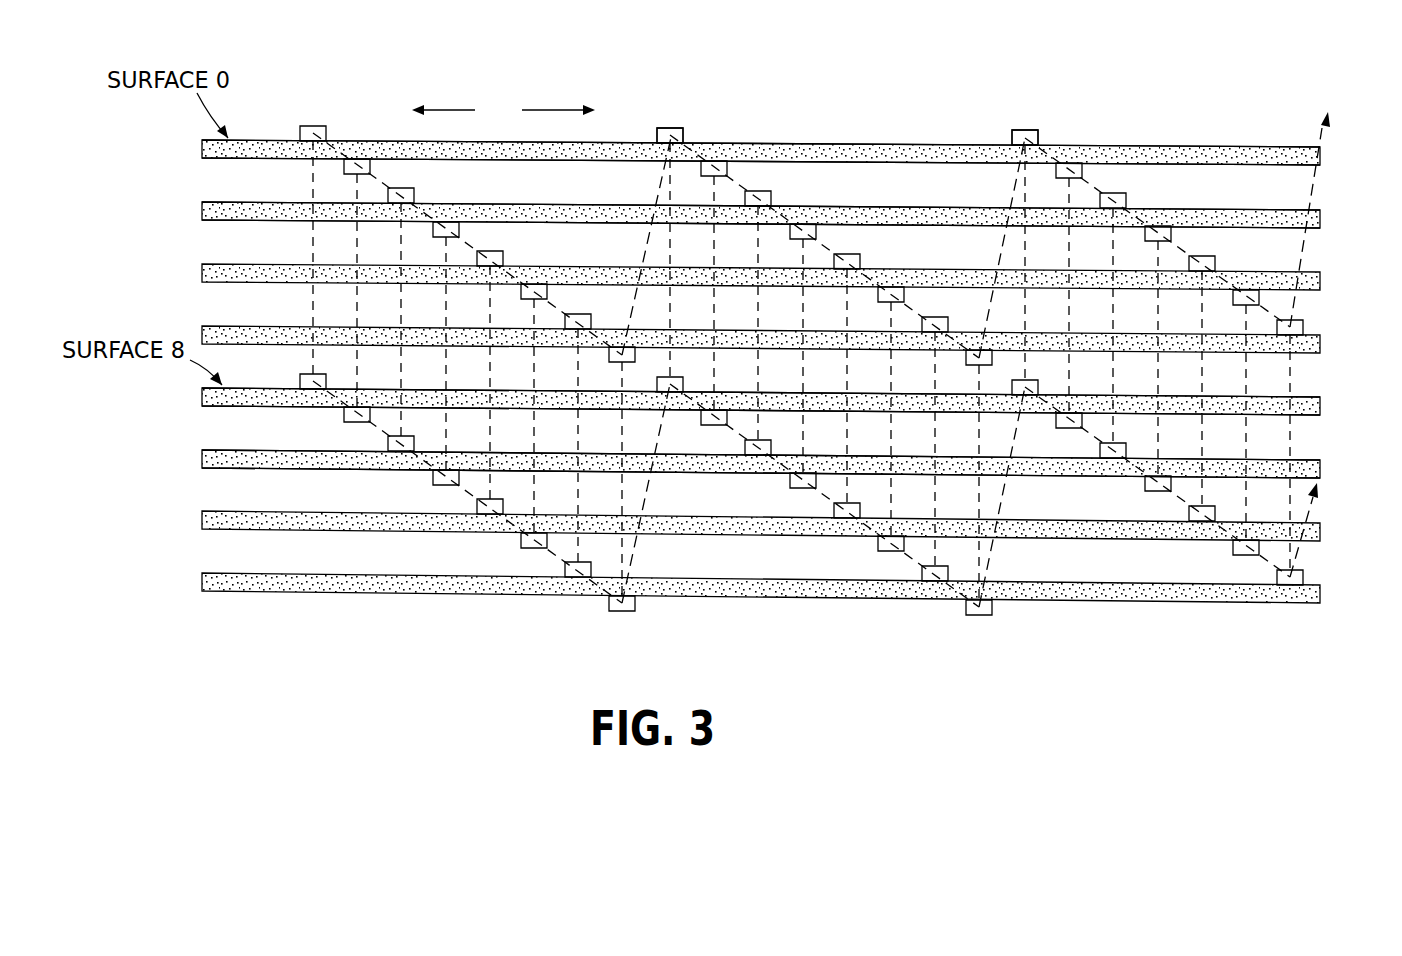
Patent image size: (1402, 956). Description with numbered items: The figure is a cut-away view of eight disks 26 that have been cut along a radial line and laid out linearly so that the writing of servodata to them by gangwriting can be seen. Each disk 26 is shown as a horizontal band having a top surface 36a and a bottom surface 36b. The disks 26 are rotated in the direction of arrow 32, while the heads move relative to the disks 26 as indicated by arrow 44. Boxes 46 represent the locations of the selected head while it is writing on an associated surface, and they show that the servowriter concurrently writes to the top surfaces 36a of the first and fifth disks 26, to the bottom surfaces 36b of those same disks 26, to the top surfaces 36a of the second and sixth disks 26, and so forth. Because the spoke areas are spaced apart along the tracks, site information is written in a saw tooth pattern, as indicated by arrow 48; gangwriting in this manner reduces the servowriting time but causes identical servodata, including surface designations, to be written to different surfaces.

The disks 26 is at (1322, 595).
The top surface 36a is at (223, 450).
The bottom surface 36b is at (232, 468).
The arrow 32 is at (443, 96).
The arrow 44 is at (558, 96).
The boxes 46 is at (1025, 131).
The arrow 48 is at (634, 549).